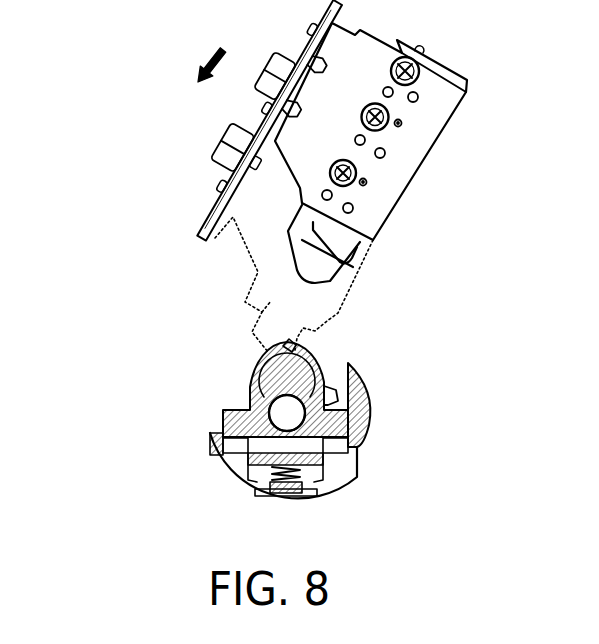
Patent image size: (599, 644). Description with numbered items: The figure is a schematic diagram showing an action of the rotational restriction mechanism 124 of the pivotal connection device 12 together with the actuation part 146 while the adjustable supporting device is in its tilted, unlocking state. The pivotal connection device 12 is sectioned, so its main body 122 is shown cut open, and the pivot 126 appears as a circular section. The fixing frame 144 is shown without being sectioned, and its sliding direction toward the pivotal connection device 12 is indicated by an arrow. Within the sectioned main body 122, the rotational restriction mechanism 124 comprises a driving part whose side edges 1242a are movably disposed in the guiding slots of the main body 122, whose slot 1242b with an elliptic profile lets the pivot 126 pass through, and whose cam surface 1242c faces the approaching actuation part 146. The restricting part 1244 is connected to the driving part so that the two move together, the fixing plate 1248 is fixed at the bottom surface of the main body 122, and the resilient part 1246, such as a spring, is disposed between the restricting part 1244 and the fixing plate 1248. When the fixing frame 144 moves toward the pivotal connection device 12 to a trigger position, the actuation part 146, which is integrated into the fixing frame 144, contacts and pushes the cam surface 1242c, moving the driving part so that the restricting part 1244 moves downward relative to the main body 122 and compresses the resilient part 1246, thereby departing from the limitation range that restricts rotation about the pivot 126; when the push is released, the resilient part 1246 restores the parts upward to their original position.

The pivotal connection device 12 is at (125, 370).
The main body 122 is at (360, 401).
The rotational restriction mechanism 124 is at (363, 422).
The side edge 1242a is at (333, 424).
The slot 1242b is at (326, 378).
The cam surface 1242c is at (313, 354).
The restricting part 1244 is at (328, 453).
The resilient part 1246 is at (302, 470).
The fixing plate 1248 is at (348, 508).
The pivot 126 is at (248, 387).
The fixing frame 144 is at (432, 148).
The actuation part 146 is at (329, 268).